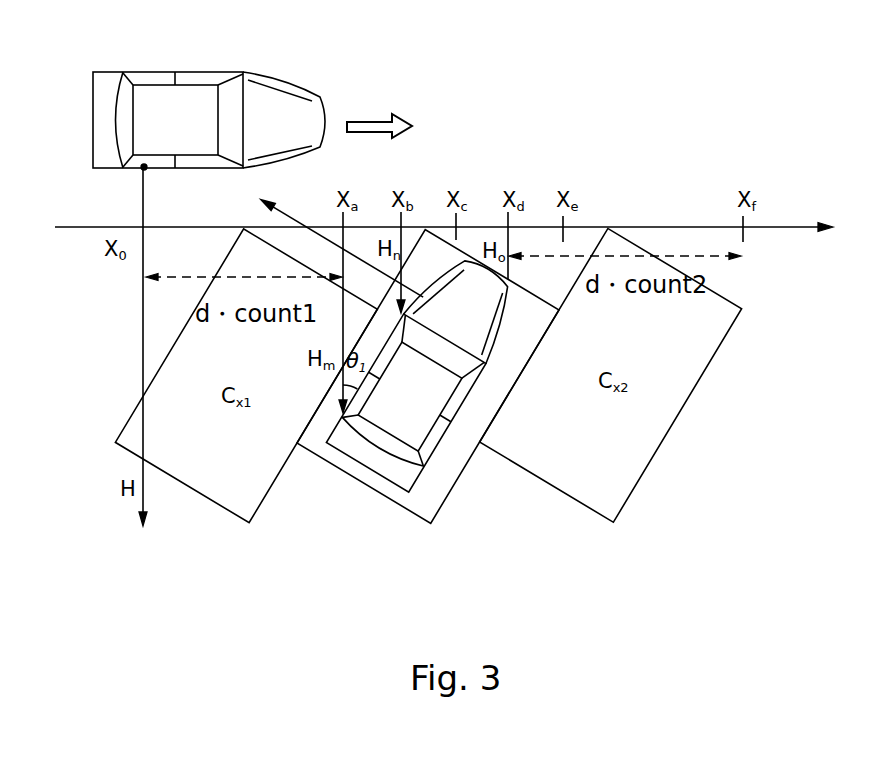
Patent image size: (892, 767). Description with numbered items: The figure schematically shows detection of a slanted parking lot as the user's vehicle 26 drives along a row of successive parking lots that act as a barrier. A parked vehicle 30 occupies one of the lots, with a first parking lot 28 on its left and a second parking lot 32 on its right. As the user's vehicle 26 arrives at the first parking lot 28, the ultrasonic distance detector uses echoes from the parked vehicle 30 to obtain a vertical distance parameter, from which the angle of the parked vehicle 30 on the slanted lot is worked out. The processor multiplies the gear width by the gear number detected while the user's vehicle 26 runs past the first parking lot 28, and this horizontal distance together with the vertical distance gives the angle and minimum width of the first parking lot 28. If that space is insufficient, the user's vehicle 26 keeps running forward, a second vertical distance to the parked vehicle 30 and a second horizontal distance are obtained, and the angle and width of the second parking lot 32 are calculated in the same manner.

The user's vehicle 26 is at (200, 82).
The first parking lot 28 is at (235, 488).
The parked vehicle 30 is at (403, 473).
The second parking lot 32 is at (650, 436).